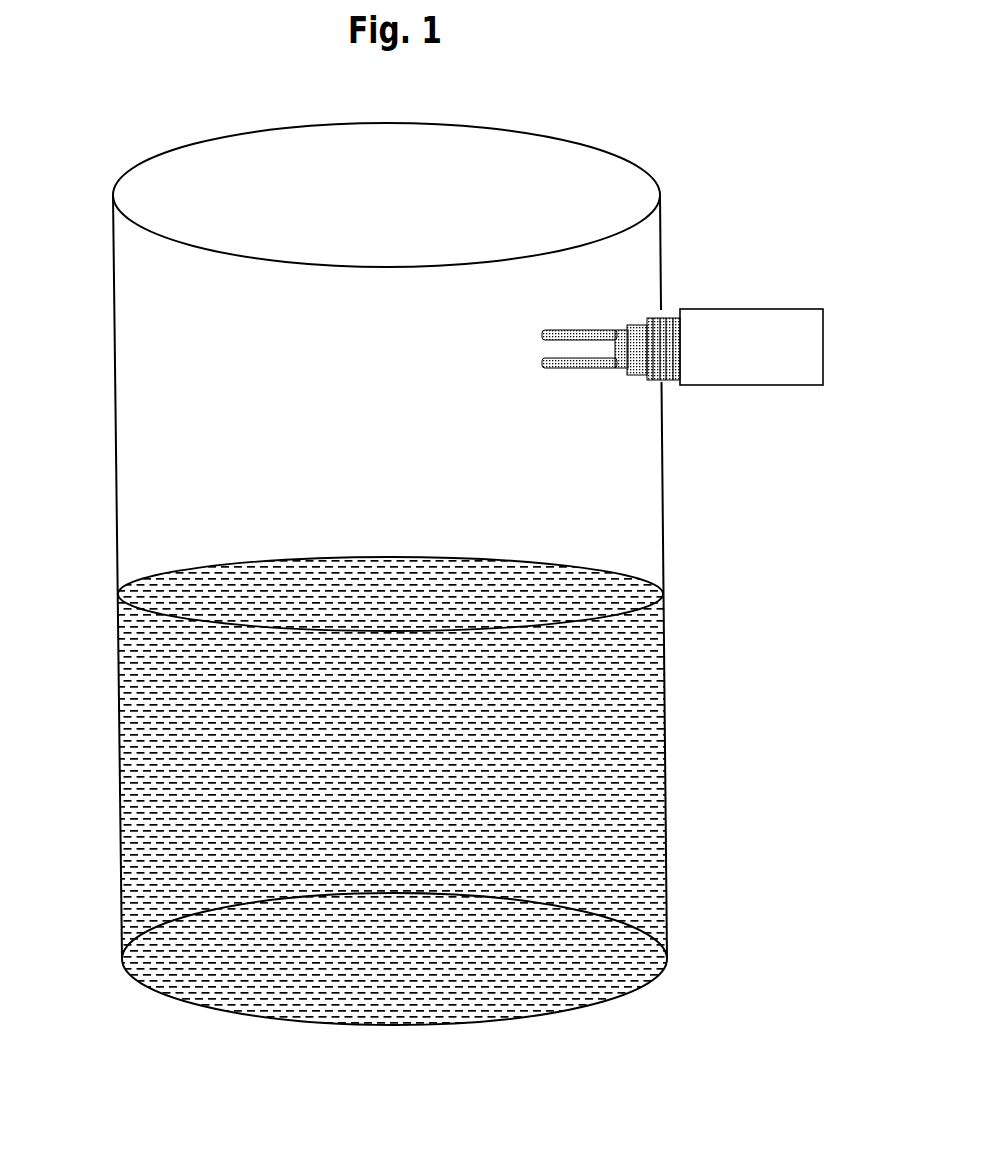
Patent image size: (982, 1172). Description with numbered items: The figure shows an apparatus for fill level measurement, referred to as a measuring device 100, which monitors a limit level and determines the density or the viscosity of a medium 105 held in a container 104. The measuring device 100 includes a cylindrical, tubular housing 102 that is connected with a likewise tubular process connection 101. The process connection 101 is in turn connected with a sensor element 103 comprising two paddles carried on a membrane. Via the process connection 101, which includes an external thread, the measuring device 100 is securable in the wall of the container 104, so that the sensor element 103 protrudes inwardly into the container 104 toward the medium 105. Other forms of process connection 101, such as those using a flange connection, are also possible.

The measuring device 100 is at (660, 372).
The process connection 101 is at (667, 323).
The housing 102 is at (737, 323).
The sensor element 103 is at (592, 363).
The container 104 is at (127, 320).
The medium 105 is at (632, 743).